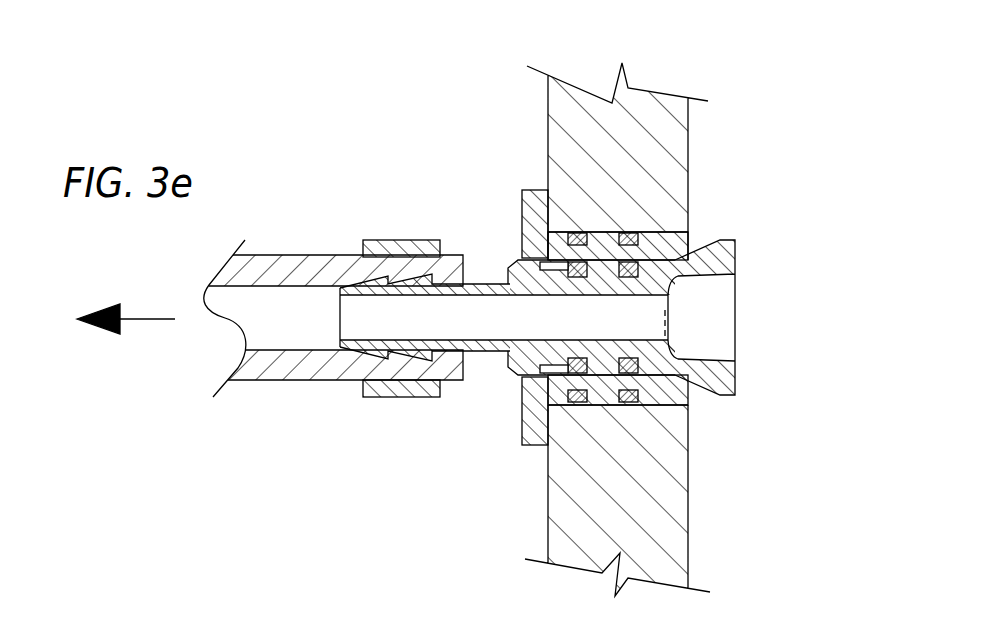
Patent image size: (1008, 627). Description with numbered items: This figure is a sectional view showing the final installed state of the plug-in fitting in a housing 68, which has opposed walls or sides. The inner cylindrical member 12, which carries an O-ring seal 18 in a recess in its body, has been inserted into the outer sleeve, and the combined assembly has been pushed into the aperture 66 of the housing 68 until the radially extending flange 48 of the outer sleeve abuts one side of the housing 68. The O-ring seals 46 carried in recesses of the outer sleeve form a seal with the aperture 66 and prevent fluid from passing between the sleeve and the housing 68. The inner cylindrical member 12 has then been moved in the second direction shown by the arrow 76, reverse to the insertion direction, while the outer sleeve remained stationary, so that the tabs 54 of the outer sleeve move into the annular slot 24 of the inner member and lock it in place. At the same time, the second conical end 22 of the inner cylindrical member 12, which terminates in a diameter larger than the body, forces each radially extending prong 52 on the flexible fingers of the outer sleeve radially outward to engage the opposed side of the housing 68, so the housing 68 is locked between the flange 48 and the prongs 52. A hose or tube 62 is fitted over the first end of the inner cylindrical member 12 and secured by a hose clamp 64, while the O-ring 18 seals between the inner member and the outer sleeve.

The inner cylindrical member 12 is at (736, 294).
The O-ring seal 18 is at (668, 352).
The second conical end 22 is at (738, 372).
The annular slot 24 is at (560, 233).
The O-ring seal 46 is at (634, 233).
The radially extending flange 48 is at (522, 218).
The radially extending prong 52 is at (693, 241).
The tab 54 is at (545, 372).
The hose or tube 62 is at (318, 255).
The hose clamp 64 is at (388, 398).
The aperture 66 is at (677, 236).
The housing 68 is at (678, 468).
The arrow 76 is at (150, 319).